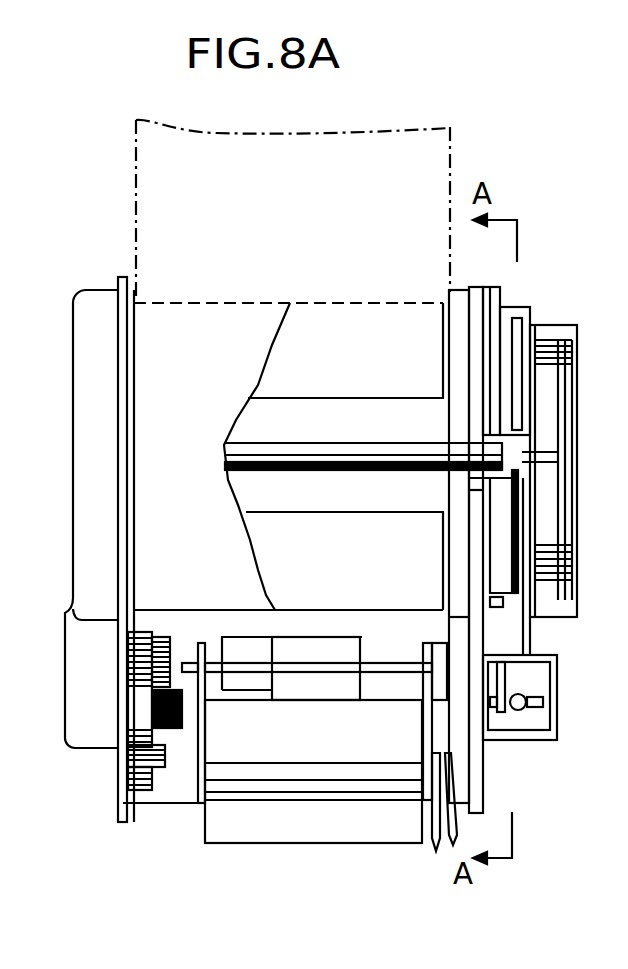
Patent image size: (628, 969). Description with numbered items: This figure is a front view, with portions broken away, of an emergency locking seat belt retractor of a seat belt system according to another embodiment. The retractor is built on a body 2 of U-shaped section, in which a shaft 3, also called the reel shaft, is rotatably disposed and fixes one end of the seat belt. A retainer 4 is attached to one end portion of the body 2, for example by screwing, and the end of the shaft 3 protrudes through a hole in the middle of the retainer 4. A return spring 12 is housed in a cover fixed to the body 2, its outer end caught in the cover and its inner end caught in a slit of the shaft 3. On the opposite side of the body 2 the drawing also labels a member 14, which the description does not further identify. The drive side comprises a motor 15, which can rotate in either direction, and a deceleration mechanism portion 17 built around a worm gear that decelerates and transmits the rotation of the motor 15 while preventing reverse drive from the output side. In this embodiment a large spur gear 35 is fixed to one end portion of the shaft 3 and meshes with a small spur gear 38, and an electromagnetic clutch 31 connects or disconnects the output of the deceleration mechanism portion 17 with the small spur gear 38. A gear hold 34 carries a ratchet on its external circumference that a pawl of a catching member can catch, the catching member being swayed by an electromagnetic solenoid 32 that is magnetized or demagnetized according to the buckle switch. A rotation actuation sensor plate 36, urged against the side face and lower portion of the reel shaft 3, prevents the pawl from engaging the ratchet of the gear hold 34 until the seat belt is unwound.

The body 2 is at (623, 195).
The shaft 3 is at (387, 453).
The retainer 4 is at (477, 817).
The return spring 12 is at (550, 407).
The cover 14 is at (97, 318).
The motor 15 is at (250, 778).
The deceleration mechanism portion 17 is at (167, 795).
The electromagnetic clutch 31 is at (320, 678).
The electromagnetic solenoid 32 is at (533, 721).
The gear hold 34 is at (500, 363).
The large spur gear 35 is at (463, 322).
The rotation actuation sensor plate 36 is at (518, 557).
The small spur gear 38 is at (455, 683).